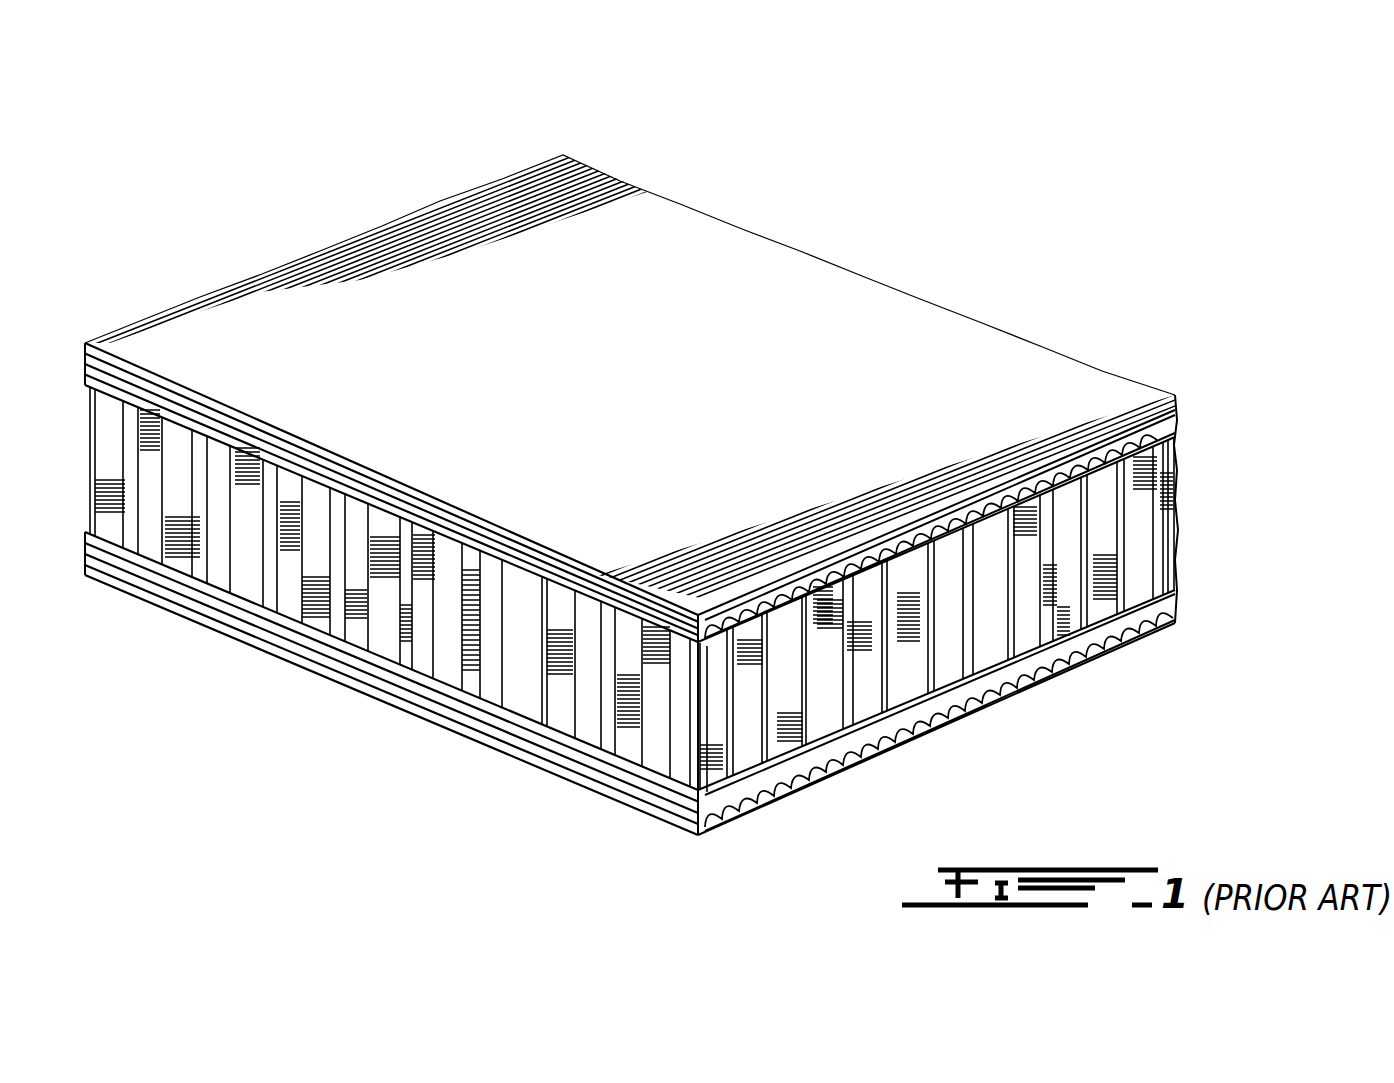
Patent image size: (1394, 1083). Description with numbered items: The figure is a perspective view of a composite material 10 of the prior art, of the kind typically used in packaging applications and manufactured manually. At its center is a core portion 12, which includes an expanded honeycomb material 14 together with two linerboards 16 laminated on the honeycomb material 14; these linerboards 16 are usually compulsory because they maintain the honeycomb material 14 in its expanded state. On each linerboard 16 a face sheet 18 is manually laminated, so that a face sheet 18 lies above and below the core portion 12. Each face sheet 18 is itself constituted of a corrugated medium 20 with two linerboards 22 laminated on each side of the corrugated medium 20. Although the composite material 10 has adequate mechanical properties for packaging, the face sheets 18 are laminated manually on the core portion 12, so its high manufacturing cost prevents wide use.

The composite material 10 is at (768, 172).
The core portion 12 is at (1215, 543).
The expanded honeycomb material 14 is at (707, 713).
The linerboard 16 is at (1180, 465).
The face sheet 18 is at (1200, 408).
The corrugated medium 20 is at (1118, 435).
The linerboard 22 is at (1047, 373).